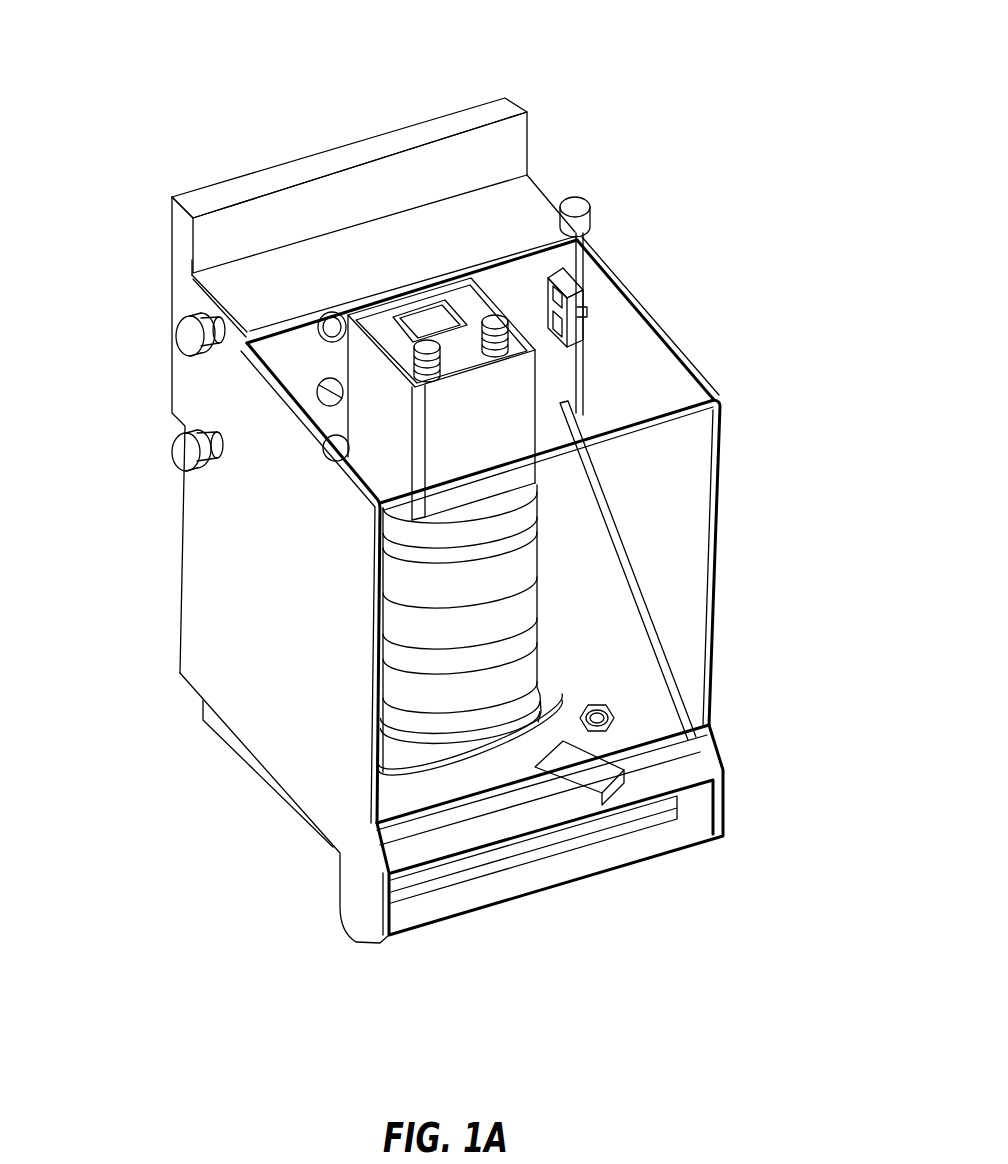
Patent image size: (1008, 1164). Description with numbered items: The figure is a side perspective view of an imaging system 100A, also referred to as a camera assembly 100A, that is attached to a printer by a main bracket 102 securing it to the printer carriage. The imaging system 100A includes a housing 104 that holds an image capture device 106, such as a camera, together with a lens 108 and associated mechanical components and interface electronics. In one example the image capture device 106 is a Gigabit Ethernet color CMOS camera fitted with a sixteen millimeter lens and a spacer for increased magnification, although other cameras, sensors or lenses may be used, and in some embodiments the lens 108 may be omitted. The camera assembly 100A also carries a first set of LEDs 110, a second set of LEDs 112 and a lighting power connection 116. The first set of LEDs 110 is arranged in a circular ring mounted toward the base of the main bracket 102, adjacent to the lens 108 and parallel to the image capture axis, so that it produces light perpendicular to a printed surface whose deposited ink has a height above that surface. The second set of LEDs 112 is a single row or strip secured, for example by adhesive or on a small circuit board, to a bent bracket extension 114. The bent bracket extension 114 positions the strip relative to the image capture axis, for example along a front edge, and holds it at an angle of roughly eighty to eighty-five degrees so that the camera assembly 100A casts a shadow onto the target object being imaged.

The imaging system 100A is at (786, 52).
The main bracket 102 is at (272, 286).
The housing 104 is at (600, 272).
The image capture device 106 is at (513, 427).
The lens 108 is at (533, 587).
The first set of LEDs 110 is at (562, 697).
The second set of LEDs 112 is at (680, 763).
The bent bracket extension 114 is at (643, 783).
The lighting power connection 116 is at (573, 760).